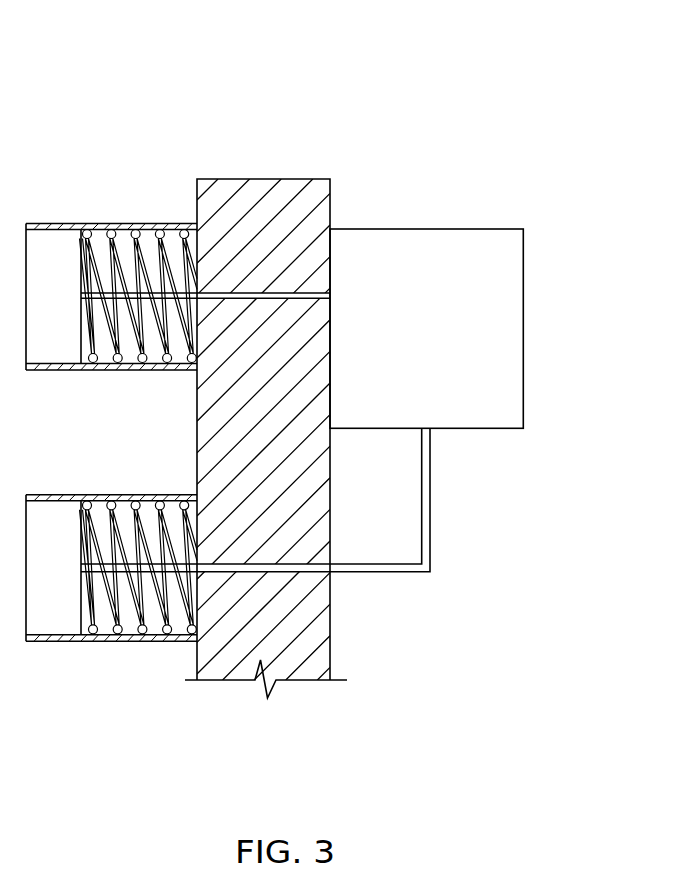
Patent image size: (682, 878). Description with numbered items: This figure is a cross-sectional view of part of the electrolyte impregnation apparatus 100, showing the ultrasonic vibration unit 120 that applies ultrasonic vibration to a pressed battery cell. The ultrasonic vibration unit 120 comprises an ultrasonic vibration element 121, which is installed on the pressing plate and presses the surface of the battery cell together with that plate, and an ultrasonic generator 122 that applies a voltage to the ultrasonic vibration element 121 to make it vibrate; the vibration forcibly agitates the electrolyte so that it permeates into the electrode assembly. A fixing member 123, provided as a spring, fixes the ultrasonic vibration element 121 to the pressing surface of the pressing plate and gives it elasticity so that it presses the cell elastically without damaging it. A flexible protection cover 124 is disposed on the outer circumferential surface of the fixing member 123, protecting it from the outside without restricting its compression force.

The electrolyte impregnation apparatus 100 is at (613, 118).
The ultrasonic vibration unit 120 is at (423, 65).
The ultrasonic vibration element 121 is at (55, 242).
The ultrasonic generator 122 is at (418, 237).
The fixing member 123 is at (157, 232).
The protection cover 124 is at (175, 225).